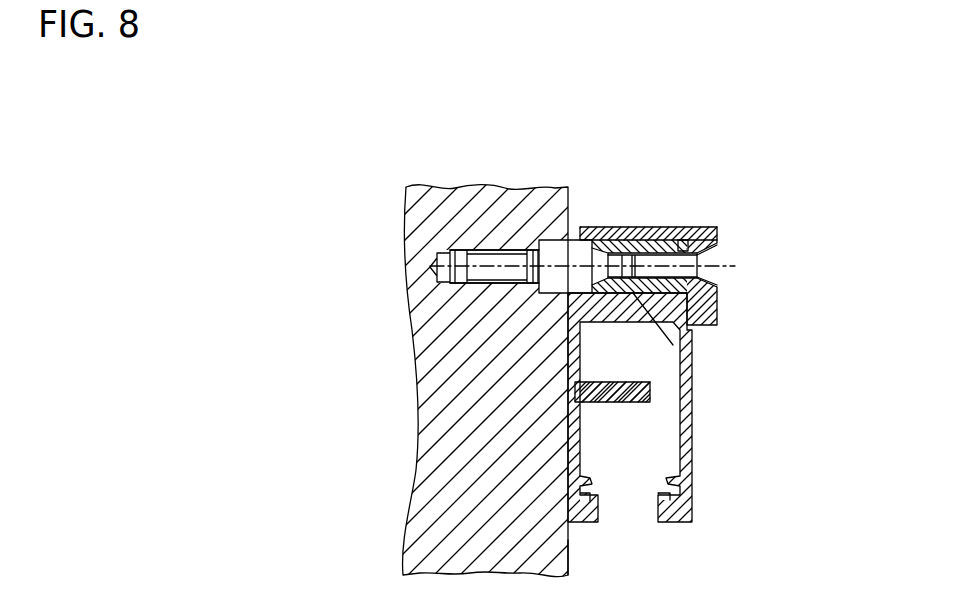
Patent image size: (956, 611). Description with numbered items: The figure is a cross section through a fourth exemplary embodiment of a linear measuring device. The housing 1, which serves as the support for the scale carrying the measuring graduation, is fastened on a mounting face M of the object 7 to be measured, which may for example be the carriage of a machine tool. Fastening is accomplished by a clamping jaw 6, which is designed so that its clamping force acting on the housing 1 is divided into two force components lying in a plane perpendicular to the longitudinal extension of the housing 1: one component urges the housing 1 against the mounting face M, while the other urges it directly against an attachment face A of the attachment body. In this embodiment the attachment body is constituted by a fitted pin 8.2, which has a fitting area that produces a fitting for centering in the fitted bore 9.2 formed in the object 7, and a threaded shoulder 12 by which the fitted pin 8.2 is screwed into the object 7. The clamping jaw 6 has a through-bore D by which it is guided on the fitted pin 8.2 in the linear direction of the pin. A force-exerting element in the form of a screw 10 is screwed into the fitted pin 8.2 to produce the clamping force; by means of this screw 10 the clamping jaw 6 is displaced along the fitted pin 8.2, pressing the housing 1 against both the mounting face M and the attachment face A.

The housing 1 is at (680, 513).
The clamping jaw 6 is at (648, 227).
The object 7 is at (445, 520).
The fitted pin 8.2 is at (563, 240).
The fitted bore 9.2 is at (560, 253).
The screw 10 is at (707, 259).
The threaded shoulder 12 is at (466, 250).
The attachment face A is at (673, 345).
The through-bore D is at (687, 230).
The mounting face M is at (568, 559).